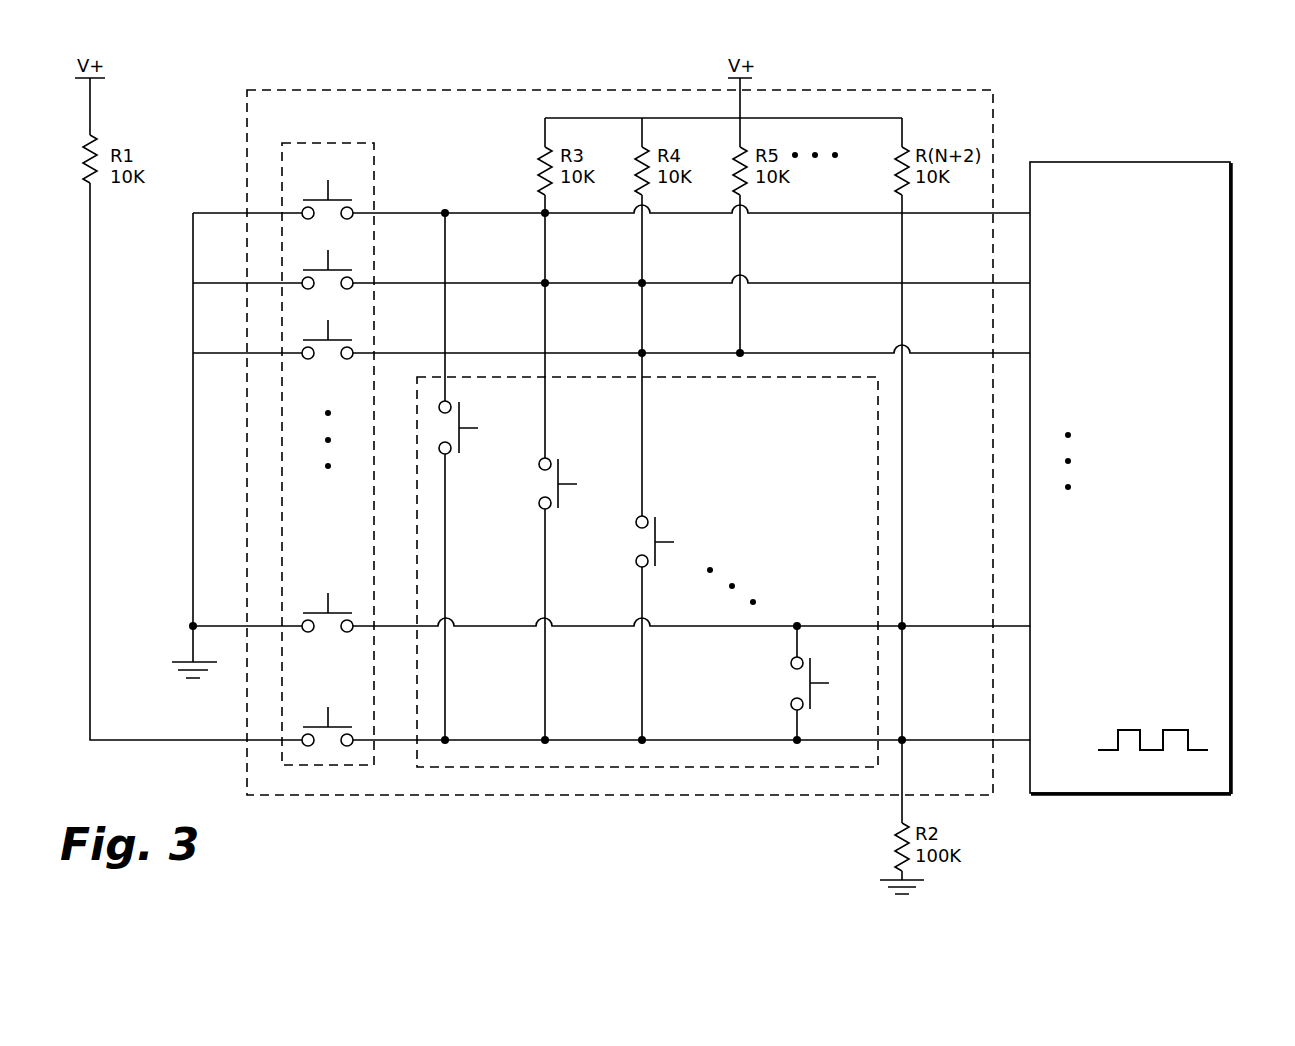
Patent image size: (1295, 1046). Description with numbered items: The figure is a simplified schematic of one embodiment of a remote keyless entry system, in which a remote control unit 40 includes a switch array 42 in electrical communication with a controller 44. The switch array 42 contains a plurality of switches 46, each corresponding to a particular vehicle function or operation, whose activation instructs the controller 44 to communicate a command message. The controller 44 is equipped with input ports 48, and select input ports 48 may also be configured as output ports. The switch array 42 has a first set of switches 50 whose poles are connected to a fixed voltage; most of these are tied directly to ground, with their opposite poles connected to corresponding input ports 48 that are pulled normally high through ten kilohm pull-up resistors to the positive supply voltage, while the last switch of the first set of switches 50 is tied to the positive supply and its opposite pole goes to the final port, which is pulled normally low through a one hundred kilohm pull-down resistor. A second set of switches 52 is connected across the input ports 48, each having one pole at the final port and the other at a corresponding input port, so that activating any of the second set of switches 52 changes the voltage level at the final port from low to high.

The remote control unit 40 is at (1133, 120).
The switch array 42 is at (247, 140).
The controller 44 is at (1232, 230).
The switch 46 is at (348, 198).
The input port 48 is at (1073, 227).
The first set of switches 50 is at (282, 477).
The second set of switches 52 is at (878, 463).